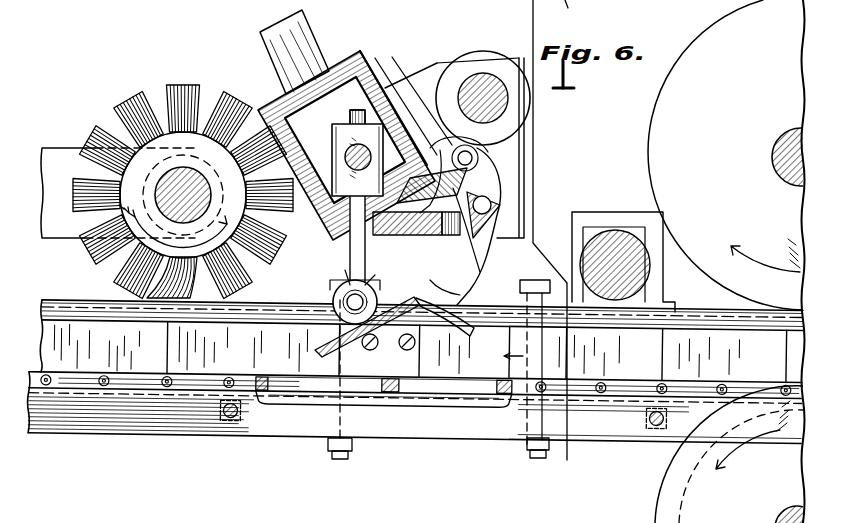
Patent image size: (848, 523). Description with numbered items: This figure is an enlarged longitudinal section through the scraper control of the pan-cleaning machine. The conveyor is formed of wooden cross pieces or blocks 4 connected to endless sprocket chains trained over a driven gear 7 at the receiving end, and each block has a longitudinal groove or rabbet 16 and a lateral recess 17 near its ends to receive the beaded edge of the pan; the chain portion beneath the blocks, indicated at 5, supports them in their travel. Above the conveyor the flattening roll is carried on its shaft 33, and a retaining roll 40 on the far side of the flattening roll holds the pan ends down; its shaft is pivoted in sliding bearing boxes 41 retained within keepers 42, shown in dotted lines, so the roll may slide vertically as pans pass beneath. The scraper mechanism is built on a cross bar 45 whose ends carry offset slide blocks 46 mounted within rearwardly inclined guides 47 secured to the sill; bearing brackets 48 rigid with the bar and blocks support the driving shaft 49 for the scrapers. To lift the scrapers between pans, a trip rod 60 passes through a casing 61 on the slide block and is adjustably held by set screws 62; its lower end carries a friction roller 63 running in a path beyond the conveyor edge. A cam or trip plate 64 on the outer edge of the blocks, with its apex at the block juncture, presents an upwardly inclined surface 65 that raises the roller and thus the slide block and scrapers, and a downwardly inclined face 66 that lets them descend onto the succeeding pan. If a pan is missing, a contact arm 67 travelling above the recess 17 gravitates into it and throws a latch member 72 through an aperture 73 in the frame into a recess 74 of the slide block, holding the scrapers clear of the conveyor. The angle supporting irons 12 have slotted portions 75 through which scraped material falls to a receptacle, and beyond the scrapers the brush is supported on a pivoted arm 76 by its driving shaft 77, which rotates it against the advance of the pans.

The cross pieces or blocks 4 is at (415, 388).
The lower wheel shaft 5 is at (638, 392).
The gear 7 is at (574, 464).
The angle supporting irons 12 is at (180, 410).
The longitudinal groove or rabbet 16 is at (440, 306).
The lateral recess 17 is at (497, 318).
The shaft 33 is at (782, 140).
The retaining roll 40 is at (597, 243).
The sliding bearing boxes 41 is at (650, 246).
The keepers 42 is at (650, 226).
The cross bar 45 is at (503, 214).
The offset slide blocks 46 is at (387, 83).
The guides 47 is at (366, 56).
The bearing brackets 48 is at (406, 108).
The driving shaft 49 is at (505, 100).
The trip rod 60 is at (405, 200).
The casing 61 is at (340, 124).
The set screws 62 is at (362, 133).
The friction roller 63 is at (378, 296).
The cam or trip plate 64 is at (415, 346).
The upwardly inclined surface 65 is at (318, 350).
The downwardly inclined face 66 is at (454, 325).
The contact arm 67 is at (431, 292).
The latch member 72 is at (479, 160).
The aperture 73 is at (487, 169).
The recess 74 is at (431, 142).
The slotted portions 75 is at (362, 378).
The pivoted arm 76 is at (46, 148).
The driving shaft 77 is at (184, 186).